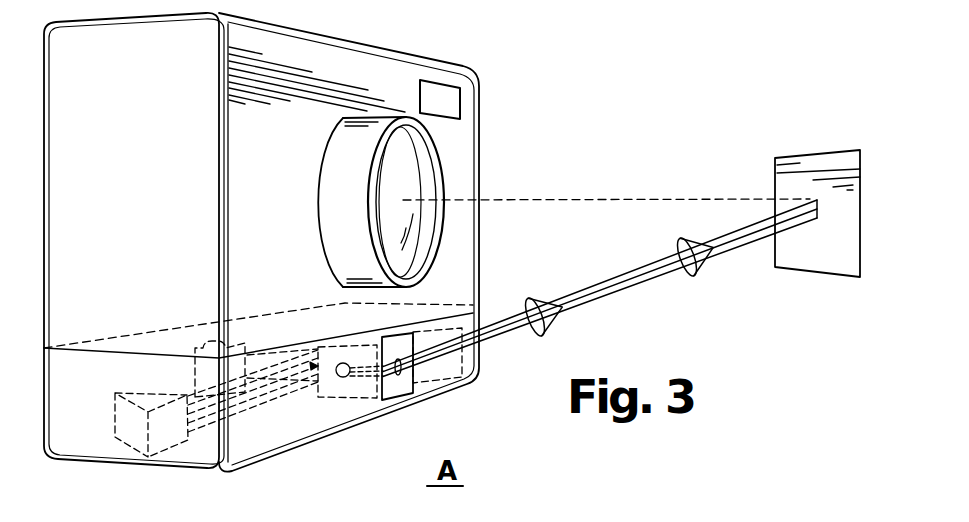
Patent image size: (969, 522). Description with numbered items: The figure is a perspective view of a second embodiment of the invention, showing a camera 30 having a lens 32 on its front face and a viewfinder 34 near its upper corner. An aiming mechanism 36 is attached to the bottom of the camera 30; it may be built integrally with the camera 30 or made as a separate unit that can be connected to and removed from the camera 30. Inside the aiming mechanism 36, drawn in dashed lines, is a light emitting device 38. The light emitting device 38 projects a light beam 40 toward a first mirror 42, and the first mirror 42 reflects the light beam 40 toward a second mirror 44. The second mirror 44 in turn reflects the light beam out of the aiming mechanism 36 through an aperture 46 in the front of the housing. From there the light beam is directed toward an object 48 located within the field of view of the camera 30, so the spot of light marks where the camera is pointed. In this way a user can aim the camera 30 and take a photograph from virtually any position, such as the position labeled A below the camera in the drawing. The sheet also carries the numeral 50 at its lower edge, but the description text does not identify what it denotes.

The camera 30 is at (448, 50).
The lens 32 is at (405, 172).
The viewfinder 34 is at (452, 105).
The aiming mechanism 36 is at (108, 445).
The light emitting device 38 is at (345, 405).
The light beam 40 is at (278, 400).
The first mirror 42 is at (178, 447).
The second mirror 44 is at (203, 342).
The aperture 46 is at (400, 377).
The object 48 is at (833, 253).
The projected light beam 50 is at (600, 360).